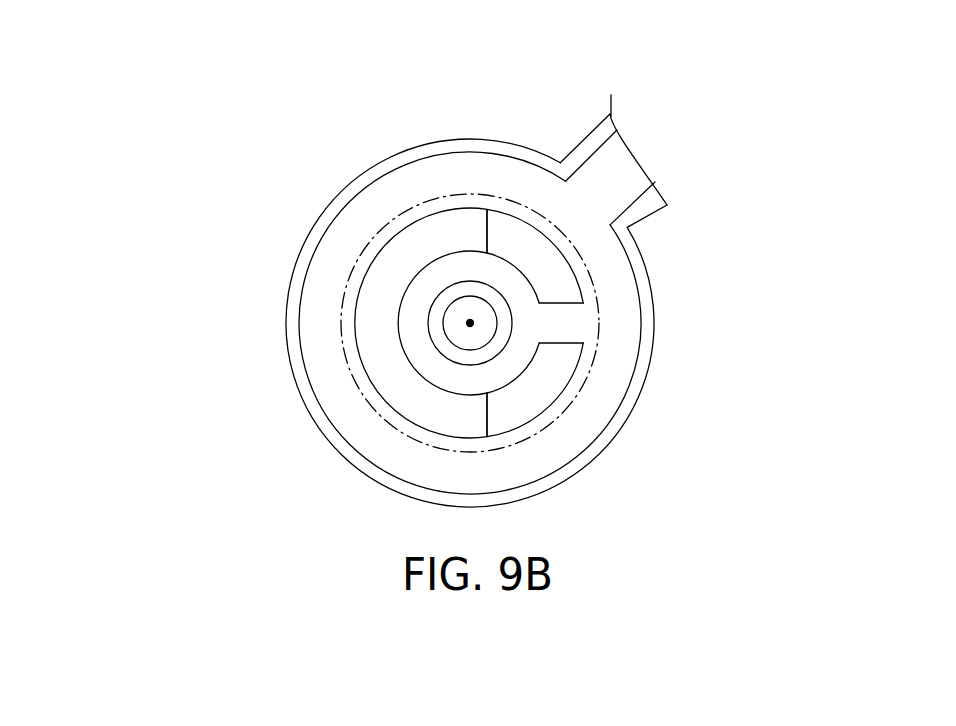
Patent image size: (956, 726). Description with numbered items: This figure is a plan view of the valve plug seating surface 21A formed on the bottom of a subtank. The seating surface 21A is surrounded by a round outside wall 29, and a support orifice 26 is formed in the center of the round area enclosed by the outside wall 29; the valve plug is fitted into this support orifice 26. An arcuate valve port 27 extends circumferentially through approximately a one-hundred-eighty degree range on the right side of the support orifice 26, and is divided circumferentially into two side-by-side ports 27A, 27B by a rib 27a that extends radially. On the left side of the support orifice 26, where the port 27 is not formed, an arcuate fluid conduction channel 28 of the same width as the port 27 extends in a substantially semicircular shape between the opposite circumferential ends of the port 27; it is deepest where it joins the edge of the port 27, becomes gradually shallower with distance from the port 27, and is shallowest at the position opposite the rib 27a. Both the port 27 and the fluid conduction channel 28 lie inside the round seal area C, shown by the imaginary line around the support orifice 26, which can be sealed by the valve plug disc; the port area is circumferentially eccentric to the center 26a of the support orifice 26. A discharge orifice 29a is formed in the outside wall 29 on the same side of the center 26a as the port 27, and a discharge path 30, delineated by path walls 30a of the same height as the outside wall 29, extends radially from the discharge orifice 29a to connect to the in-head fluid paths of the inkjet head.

The valve plug seating surface 21A is at (252, 314).
The support orifice 26 is at (480, 330).
The center of the support orifice 26a is at (470, 322).
The arcuate valve port 27 is at (540, 270).
The port 27A is at (543, 257).
The port 27B is at (543, 413).
The rib 27a is at (567, 323).
The fluid conduction channel 28 is at (388, 332).
The outside wall 29 is at (617, 437).
The discharge orifice 29a is at (633, 224).
The discharge path 30 is at (623, 188).
The path walls 30a is at (587, 138).
The seal area C is at (345, 372).